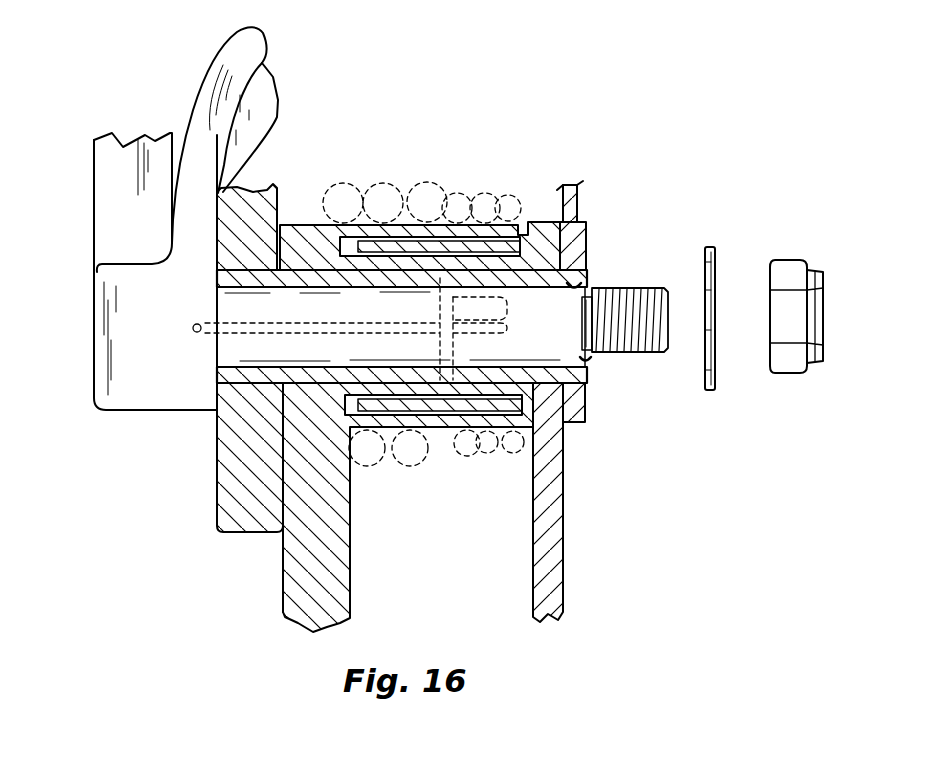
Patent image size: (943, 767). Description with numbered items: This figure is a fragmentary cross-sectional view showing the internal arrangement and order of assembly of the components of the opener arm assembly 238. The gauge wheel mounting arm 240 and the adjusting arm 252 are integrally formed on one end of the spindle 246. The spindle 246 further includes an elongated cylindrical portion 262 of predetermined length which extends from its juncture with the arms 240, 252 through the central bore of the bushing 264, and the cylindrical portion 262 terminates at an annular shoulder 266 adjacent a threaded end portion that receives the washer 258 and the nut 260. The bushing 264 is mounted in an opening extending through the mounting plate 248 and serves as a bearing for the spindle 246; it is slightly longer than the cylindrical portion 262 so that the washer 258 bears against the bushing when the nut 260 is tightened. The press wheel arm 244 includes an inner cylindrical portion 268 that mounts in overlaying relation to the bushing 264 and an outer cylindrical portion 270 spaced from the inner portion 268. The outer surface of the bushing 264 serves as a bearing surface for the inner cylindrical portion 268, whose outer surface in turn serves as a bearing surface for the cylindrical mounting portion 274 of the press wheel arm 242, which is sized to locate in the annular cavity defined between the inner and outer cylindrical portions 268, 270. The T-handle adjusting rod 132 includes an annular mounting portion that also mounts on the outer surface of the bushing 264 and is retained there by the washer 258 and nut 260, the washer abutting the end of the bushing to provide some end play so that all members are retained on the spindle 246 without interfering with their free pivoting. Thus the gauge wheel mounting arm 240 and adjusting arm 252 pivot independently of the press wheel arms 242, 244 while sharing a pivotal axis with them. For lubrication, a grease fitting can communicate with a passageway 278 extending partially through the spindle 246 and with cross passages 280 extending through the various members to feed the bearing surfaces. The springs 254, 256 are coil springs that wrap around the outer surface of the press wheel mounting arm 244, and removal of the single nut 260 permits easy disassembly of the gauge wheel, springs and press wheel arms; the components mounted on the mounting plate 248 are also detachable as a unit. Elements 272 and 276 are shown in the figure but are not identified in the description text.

The T-handle adjusting rod 132 is at (578, 208).
The opener arm assembly 238 is at (619, 637).
The gauge wheel mounting arm 240 is at (93, 157).
The press wheel arm 242 is at (567, 593).
The press wheel arm 244 is at (285, 575).
The spindle 246 is at (672, 350).
The mounting plate 248 is at (281, 212).
The adjusting arm 252 is at (207, 63).
The spring 254 is at (455, 452).
The spring 256 is at (400, 468).
The washer 258 is at (715, 247).
The nut 260 is at (787, 262).
The elongated cylindrical portion 262 is at (217, 427).
The bushing 264 is at (233, 293).
The annular shoulder 266 is at (587, 357).
The inner cylindrical portion 268 is at (489, 237).
The outer cylindrical portion 270 is at (390, 227).
The retaining ring 272 is at (584, 280).
The cylindrical mounting portion 274 is at (500, 403).
The flange 276 is at (567, 427).
The passageway 278 is at (367, 317).
The cross passages 280 is at (470, 304).